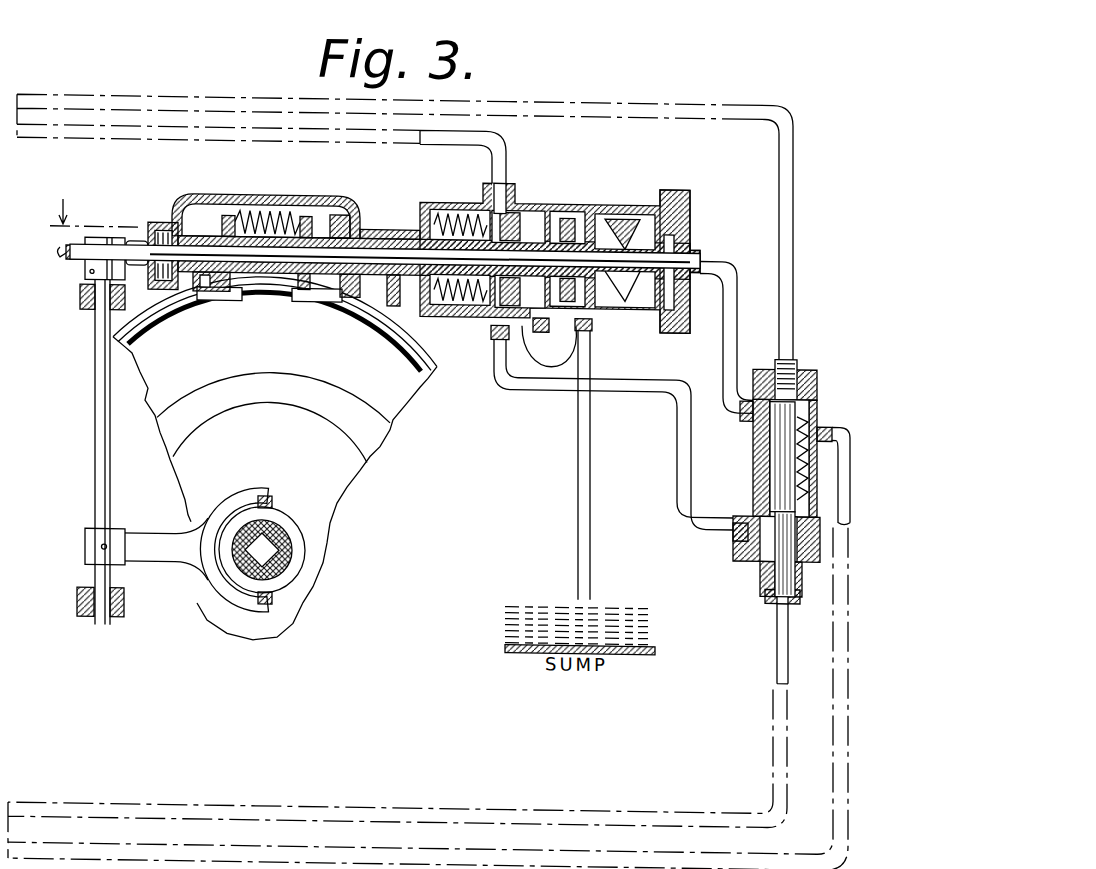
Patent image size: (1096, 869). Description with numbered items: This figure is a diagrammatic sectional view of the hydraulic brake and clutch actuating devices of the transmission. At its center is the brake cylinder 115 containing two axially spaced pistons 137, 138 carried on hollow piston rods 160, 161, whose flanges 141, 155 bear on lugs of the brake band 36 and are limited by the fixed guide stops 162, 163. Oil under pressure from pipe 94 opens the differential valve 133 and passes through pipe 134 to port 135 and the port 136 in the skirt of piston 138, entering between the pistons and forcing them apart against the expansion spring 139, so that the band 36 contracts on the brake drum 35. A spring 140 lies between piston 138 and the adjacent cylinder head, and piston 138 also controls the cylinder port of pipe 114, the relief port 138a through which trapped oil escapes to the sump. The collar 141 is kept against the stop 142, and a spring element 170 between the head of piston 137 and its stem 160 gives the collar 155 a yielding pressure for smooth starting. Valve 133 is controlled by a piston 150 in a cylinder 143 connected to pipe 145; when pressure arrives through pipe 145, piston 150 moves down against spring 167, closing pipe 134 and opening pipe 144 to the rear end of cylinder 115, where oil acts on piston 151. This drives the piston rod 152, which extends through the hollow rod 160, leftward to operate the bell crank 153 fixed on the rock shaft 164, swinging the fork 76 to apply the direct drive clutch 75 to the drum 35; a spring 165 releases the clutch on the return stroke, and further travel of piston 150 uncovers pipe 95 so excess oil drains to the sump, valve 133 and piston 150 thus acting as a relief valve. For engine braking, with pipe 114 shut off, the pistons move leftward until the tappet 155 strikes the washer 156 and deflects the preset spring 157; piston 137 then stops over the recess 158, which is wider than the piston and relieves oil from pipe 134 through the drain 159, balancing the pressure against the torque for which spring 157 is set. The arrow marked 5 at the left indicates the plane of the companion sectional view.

The section line 5 is at (86, 215).
The brake drum 35 is at (388, 430).
The brake band 36 is at (436, 362).
The direct drive clutch 75 is at (358, 465).
The fork 76 is at (195, 548).
The pipe 94 is at (778, 672).
The pipe 95 is at (840, 560).
The pipe 114 is at (40, 138).
The brake cylinder 115 is at (610, 243).
The differential valve 133 is at (745, 540).
The pipe 134 is at (690, 478).
The port 135 is at (494, 332).
The port 136 is at (545, 324).
The piston 137 is at (562, 205).
The piston 138 is at (513, 205).
The relief port 138a is at (505, 200).
The expansion spring 139 is at (283, 207).
The spring 140 is at (458, 205).
The tappet or collar 141 is at (380, 224).
The stop 142 is at (422, 222).
The differential valve cylinder 143 is at (812, 405).
The pipe 144 is at (730, 350).
The pipe 145 is at (745, 99).
The piston 150 is at (800, 375).
The piston 151 is at (672, 240).
The piston rod 152 is at (668, 220).
The bell crank 153 is at (130, 238).
The tappet or collar 155 is at (236, 233).
The washer 156 is at (175, 228).
The spring 157 is at (160, 220).
The recess 158 is at (549, 354).
The drain 159 is at (588, 355).
The hollow piston rod 160 is at (342, 203).
The hollow piston rod 161 is at (380, 290).
The fixed guide stop 162 is at (205, 297).
The fixed guide stop 163 is at (330, 297).
The rock shaft 164 is at (95, 412).
The spring 165 is at (64, 253).
The spring 167 is at (770, 452).
The spring element 170 is at (628, 230).